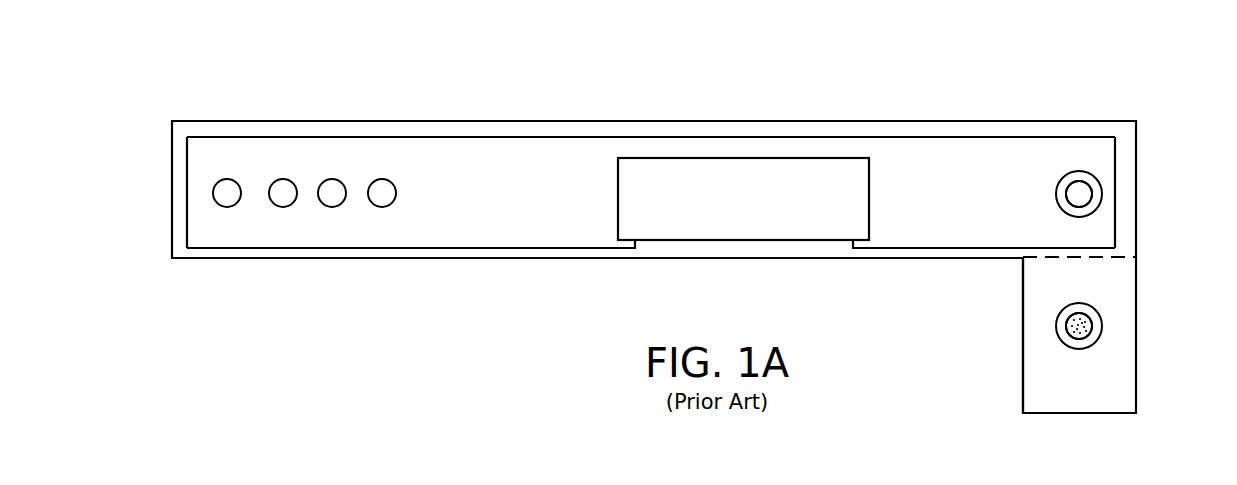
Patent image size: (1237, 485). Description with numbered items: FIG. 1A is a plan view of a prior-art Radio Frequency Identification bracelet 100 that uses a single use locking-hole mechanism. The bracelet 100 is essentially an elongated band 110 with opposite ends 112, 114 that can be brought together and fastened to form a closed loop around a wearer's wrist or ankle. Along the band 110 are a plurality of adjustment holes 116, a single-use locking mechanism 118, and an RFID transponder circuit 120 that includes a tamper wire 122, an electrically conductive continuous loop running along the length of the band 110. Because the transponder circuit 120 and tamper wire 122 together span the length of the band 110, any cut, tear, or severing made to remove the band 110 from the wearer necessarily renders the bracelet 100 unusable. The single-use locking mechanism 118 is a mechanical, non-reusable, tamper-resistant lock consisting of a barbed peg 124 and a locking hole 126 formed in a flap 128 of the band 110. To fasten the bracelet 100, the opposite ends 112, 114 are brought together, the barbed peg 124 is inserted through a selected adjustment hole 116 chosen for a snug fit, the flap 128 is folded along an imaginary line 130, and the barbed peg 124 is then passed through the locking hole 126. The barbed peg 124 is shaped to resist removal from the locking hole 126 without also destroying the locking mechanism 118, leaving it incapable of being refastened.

The RFID bracelet 100 is at (707, 73).
The elongated band 110 is at (468, 120).
The first end of band 112 is at (171, 166).
The second end of band 114 is at (1137, 190).
The adjustment holes 116 is at (372, 205).
The single-use locking mechanism 118 is at (1063, 191).
The RFID transponder circuit 120 is at (757, 232).
The tamper wire 122 is at (471, 249).
The barbed peg 124 is at (1079, 190).
The locking hole 126 is at (1079, 304).
The flap 128 is at (1137, 374).
The imaginary line 130 is at (1137, 257).